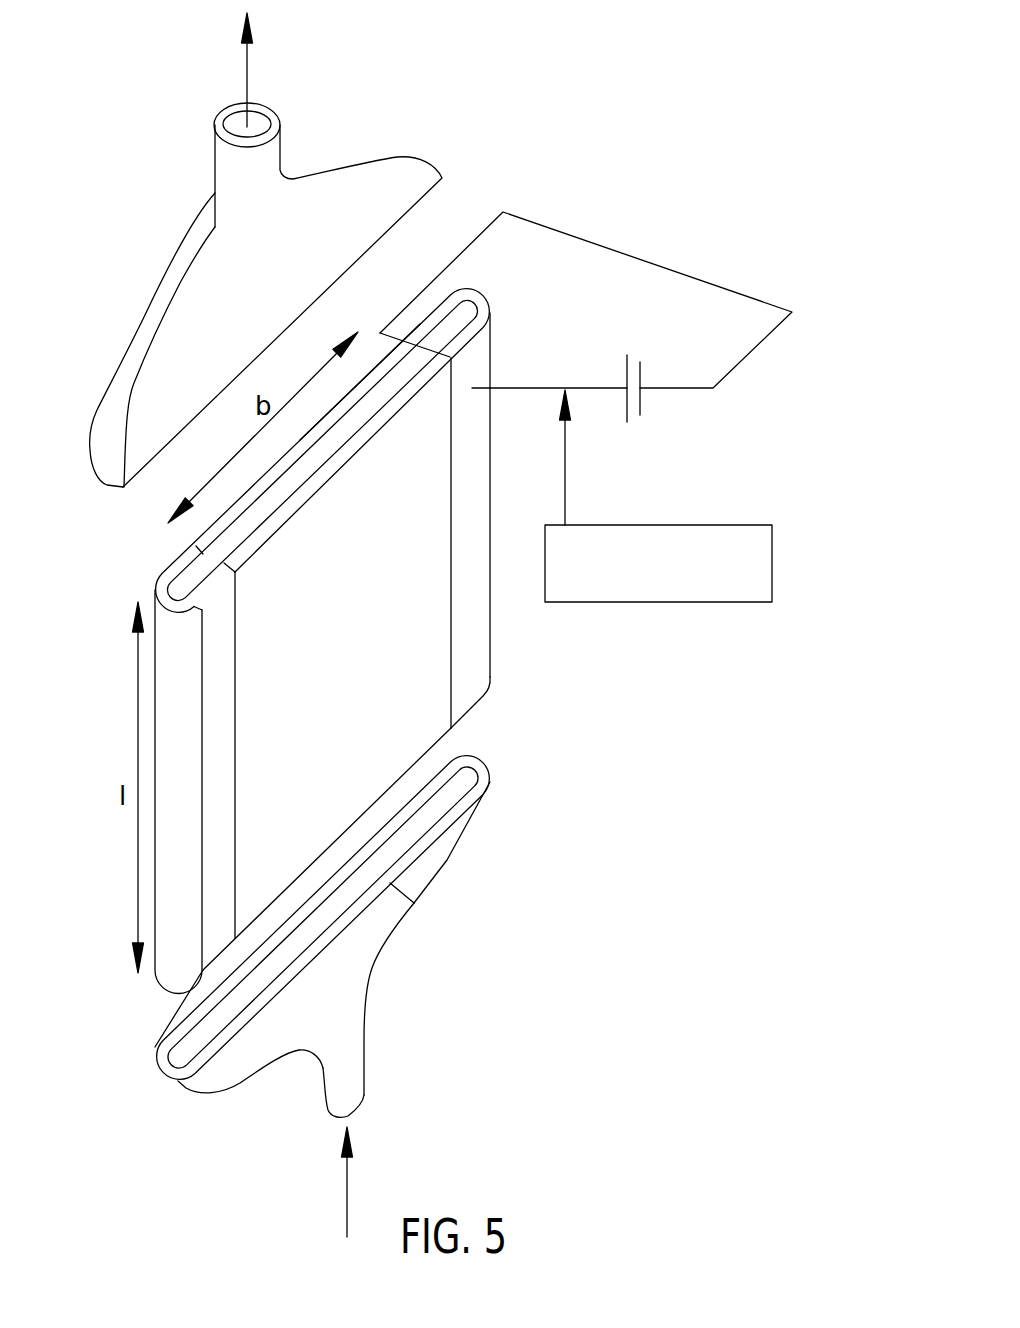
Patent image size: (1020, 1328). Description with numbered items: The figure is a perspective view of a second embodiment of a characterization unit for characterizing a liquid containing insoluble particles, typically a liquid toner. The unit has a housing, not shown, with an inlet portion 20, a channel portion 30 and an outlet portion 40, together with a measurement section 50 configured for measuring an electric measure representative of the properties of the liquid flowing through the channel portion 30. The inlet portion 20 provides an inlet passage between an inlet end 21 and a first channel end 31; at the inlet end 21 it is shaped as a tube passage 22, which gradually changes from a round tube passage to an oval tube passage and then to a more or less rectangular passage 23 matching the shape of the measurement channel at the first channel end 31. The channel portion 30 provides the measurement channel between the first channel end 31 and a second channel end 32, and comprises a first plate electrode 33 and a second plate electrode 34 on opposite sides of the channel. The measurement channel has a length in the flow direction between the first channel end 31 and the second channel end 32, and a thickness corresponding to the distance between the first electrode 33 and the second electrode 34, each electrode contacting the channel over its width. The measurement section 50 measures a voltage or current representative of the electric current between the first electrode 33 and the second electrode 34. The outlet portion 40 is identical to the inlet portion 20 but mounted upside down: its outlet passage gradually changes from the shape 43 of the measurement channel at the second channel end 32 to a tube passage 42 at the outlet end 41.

The inlet portion 20 is at (387, 996).
The inlet end 21 is at (384, 1126).
The tube passage 22 is at (350, 1032).
The rectangular passage 23 is at (414, 903).
The channel portion 30 is at (473, 602).
The first channel end 31 is at (368, 806).
The second channel end 32 is at (381, 362).
The first plate electrode 33 is at (350, 447).
The second plate electrode 34 is at (425, 725).
The outlet portion 40 is at (283, 293).
The outlet end 41 is at (262, 121).
The tube passage 42 is at (216, 109).
The shape of the measurement channel 43 is at (117, 524).
The measurement section 50 is at (723, 524).